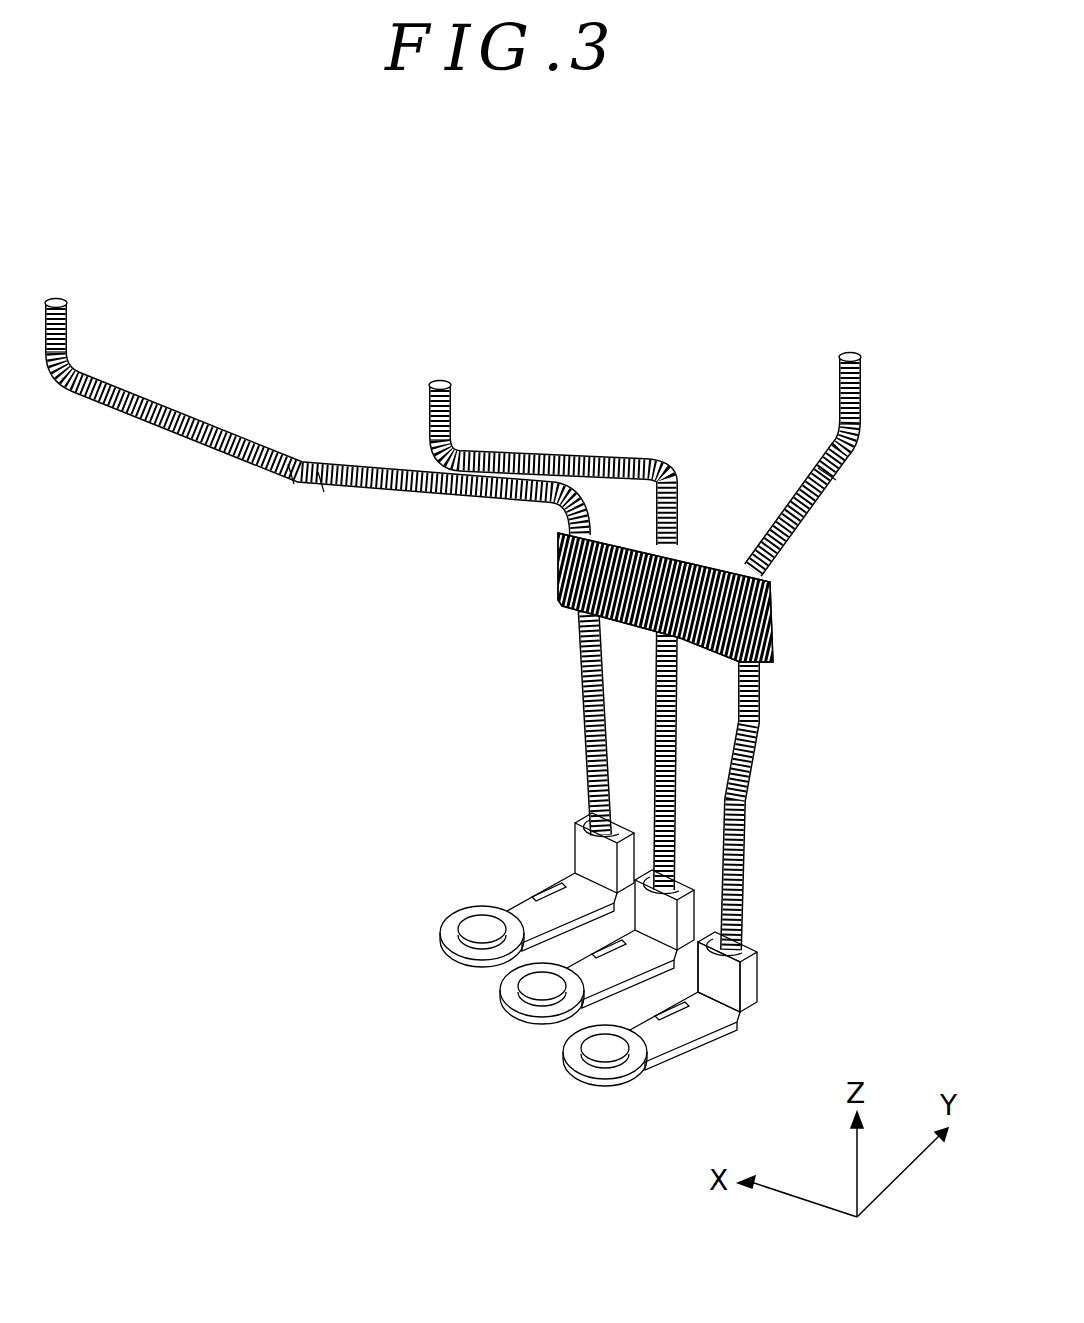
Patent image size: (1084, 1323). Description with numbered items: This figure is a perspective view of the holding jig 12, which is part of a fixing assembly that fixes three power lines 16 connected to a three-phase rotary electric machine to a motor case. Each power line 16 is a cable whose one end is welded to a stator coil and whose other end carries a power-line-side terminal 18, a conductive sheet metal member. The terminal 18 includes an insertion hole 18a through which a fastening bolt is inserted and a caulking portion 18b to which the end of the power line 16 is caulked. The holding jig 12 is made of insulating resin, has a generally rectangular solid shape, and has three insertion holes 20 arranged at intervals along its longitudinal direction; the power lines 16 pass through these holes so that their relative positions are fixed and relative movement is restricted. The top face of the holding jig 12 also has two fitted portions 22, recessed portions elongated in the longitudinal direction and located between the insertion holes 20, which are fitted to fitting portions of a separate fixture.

The holding jig 12 is at (693, 318).
The power line 16 is at (290, 464).
The power-line-side terminal 18 is at (520, 902).
The insertion hole 18a is at (477, 930).
The caulking portion 18b is at (748, 970).
The insertion hole 20 is at (578, 535).
The fitted portion 22 is at (714, 568).